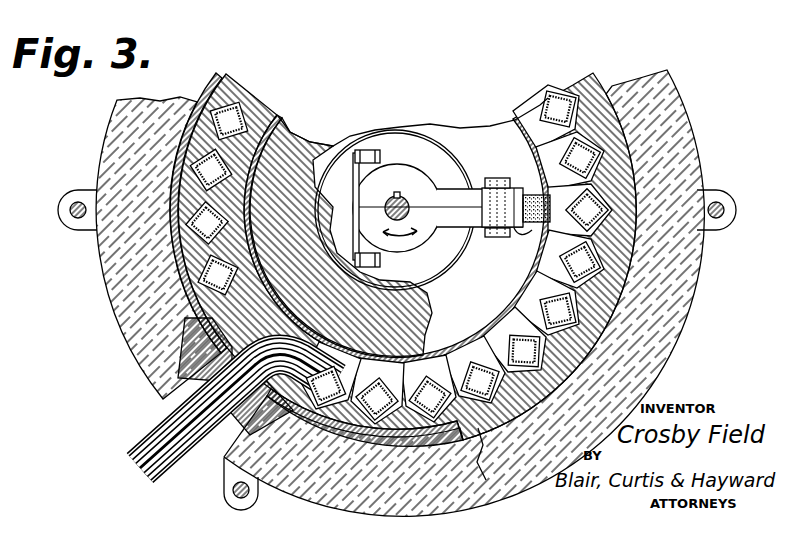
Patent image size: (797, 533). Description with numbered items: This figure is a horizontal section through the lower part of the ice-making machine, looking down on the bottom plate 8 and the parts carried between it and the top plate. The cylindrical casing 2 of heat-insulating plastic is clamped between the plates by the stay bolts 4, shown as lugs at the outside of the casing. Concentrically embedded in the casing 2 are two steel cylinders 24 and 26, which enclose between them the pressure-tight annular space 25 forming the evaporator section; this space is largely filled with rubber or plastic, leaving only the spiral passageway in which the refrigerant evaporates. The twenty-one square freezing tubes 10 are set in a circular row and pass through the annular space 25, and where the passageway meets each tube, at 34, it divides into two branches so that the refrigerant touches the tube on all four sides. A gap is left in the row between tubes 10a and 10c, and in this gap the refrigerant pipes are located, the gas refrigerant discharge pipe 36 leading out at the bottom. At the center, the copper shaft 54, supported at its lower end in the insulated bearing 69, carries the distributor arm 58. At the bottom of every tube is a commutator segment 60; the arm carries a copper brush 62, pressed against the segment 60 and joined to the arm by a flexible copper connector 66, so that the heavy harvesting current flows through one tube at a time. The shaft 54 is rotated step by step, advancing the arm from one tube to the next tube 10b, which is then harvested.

The cylindrical casing 2 is at (667, 104).
The stay bolts 4 is at (68, 218).
The bottom plate 8 is at (474, 128).
The freezing tubes 10 is at (559, 95).
The freezing tube 10a is at (331, 406).
The freezing tube 10b is at (385, 422).
The freezing tube 10c is at (196, 265).
The steel cylinder 24 is at (213, 75).
The annular space 25 is at (258, 126).
The steel cylinder 26 is at (280, 118).
The passageway branch portion around tubes 34 is at (395, 352).
The gas refrigerant discharge pipe 36 is at (143, 433).
The central copper shaft 54 is at (392, 205).
The distributor arm 58 is at (412, 168).
The commutator segments 60 is at (542, 104).
The copper brush 62 is at (536, 192).
The flexible copper connector 66 is at (526, 232).
The insulated bearing 69 is at (383, 135).